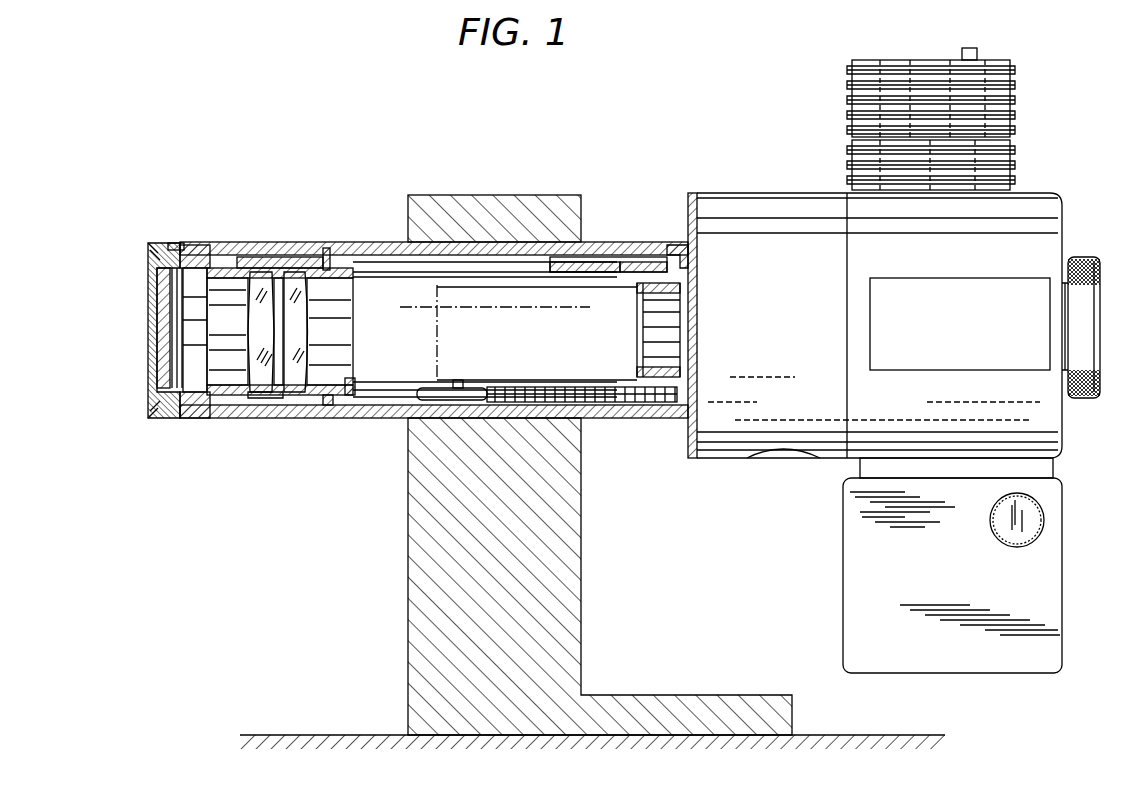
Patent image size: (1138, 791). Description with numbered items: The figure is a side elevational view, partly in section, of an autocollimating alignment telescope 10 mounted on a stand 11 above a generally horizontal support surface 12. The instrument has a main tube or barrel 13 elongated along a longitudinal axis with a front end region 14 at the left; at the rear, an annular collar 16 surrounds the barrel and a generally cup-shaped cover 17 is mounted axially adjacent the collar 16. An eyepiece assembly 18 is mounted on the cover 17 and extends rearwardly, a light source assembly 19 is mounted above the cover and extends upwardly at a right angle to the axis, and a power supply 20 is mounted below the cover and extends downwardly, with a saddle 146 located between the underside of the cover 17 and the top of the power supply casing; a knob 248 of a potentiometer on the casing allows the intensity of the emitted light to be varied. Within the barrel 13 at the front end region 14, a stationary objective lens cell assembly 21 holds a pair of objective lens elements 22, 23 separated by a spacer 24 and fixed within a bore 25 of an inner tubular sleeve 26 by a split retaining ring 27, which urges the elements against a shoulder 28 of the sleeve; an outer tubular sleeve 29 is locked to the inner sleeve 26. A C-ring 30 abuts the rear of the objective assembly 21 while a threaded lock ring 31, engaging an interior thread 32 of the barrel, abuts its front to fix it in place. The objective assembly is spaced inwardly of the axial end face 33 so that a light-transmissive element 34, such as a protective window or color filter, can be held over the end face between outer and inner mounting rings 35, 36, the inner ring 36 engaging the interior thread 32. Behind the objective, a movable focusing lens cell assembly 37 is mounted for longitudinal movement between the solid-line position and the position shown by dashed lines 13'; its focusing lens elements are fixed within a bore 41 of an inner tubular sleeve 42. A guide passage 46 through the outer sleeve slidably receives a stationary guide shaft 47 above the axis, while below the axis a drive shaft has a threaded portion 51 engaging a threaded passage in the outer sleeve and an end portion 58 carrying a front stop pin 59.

The autocollimating alignment telescope 10 is at (720, 182).
The stand 11 is at (398, 557).
The support surface 12 is at (828, 736).
The main tube or barrel 13 is at (434, 315).
The dashed-line end-limiting position 13' is at (495, 332).
The front end region 14 is at (210, 243).
The annular collar 16 is at (793, 213).
The cup-shaped cover 17 is at (1040, 210).
The eyepiece assembly 18 is at (1095, 276).
The light source assembly 19 is at (1005, 113).
The power supply 20 is at (1035, 589).
The stationary objective lens cell assembly 21 is at (344, 311).
The objective lens element 22 is at (252, 331).
The objective lens element 23 is at (301, 344).
The spacer 24 is at (288, 419).
The bore 25 is at (380, 385).
The inner tubular sleeve 26 is at (345, 262).
The split retaining ring 27 is at (352, 378).
The shoulder 28 is at (252, 383).
The outer tubular sleeve 29 is at (291, 256).
The C-ring 30 is at (330, 407).
The threaded lock ring 31 is at (222, 413).
The interior thread 32 is at (192, 419).
The axial end face 33 is at (181, 247).
The light-transmissive element 34 is at (160, 339).
The outer mounting ring 35 is at (150, 254).
The inner mounting ring 36 is at (165, 419).
The movable focusing lens cell assembly 37 is at (660, 334).
The bore 41 is at (636, 367).
The inner tubular sleeve 42 is at (636, 287).
The guide passage 46 is at (680, 250).
The guide shaft 47 is at (548, 268).
The threaded portion 51 is at (545, 387).
The end portion 58 is at (400, 410).
The front stop pin 59 is at (458, 382).
The saddle 146 is at (1050, 473).
The knob 248 is at (1040, 521).